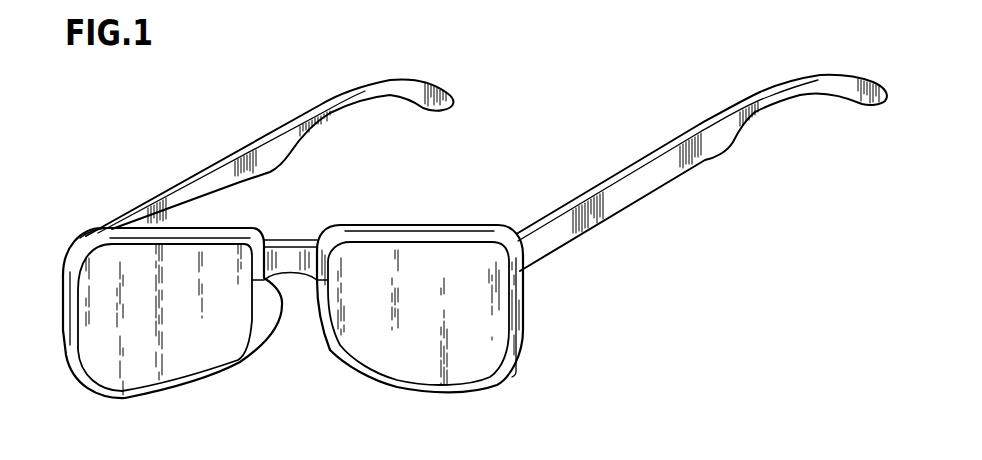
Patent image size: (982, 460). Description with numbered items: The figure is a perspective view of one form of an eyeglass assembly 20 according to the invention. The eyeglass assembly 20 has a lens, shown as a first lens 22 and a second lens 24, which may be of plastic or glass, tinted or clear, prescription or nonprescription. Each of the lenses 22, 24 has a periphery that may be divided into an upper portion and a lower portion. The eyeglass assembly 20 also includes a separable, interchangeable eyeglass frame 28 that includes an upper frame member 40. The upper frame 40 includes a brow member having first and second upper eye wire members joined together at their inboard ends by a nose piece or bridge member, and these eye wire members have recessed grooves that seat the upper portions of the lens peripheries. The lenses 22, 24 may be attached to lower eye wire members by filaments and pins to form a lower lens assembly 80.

The eyeglass assembly 20 is at (465, 267).
The first lens 22 is at (100, 342).
The second lens 24 is at (468, 350).
The eyeglass frame 28 is at (52, 254).
The upper frame member 40 is at (98, 240).
The lower lens assembly 80 is at (515, 305).